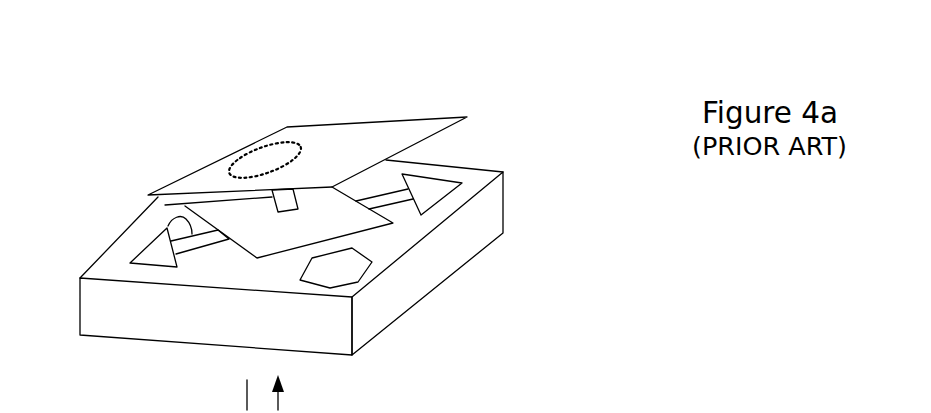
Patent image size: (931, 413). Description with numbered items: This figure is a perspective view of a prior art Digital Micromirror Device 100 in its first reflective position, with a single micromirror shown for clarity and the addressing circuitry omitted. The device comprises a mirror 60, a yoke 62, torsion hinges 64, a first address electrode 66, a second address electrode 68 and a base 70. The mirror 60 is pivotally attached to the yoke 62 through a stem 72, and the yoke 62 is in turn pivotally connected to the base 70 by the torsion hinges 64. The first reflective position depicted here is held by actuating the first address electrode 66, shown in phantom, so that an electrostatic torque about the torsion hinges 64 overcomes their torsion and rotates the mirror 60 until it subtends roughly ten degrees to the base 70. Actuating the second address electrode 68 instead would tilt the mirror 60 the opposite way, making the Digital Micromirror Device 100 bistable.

The Digital Micromirror Device 100 is at (200, 100).
The mirror 60 is at (468, 118).
The yoke 62 is at (262, 250).
The torsion hinges 64 is at (185, 206).
The first address electrode 66 is at (301, 126).
The second address electrode 68 is at (349, 283).
The base 70 is at (505, 194).
The stem 72 is at (165, 205).